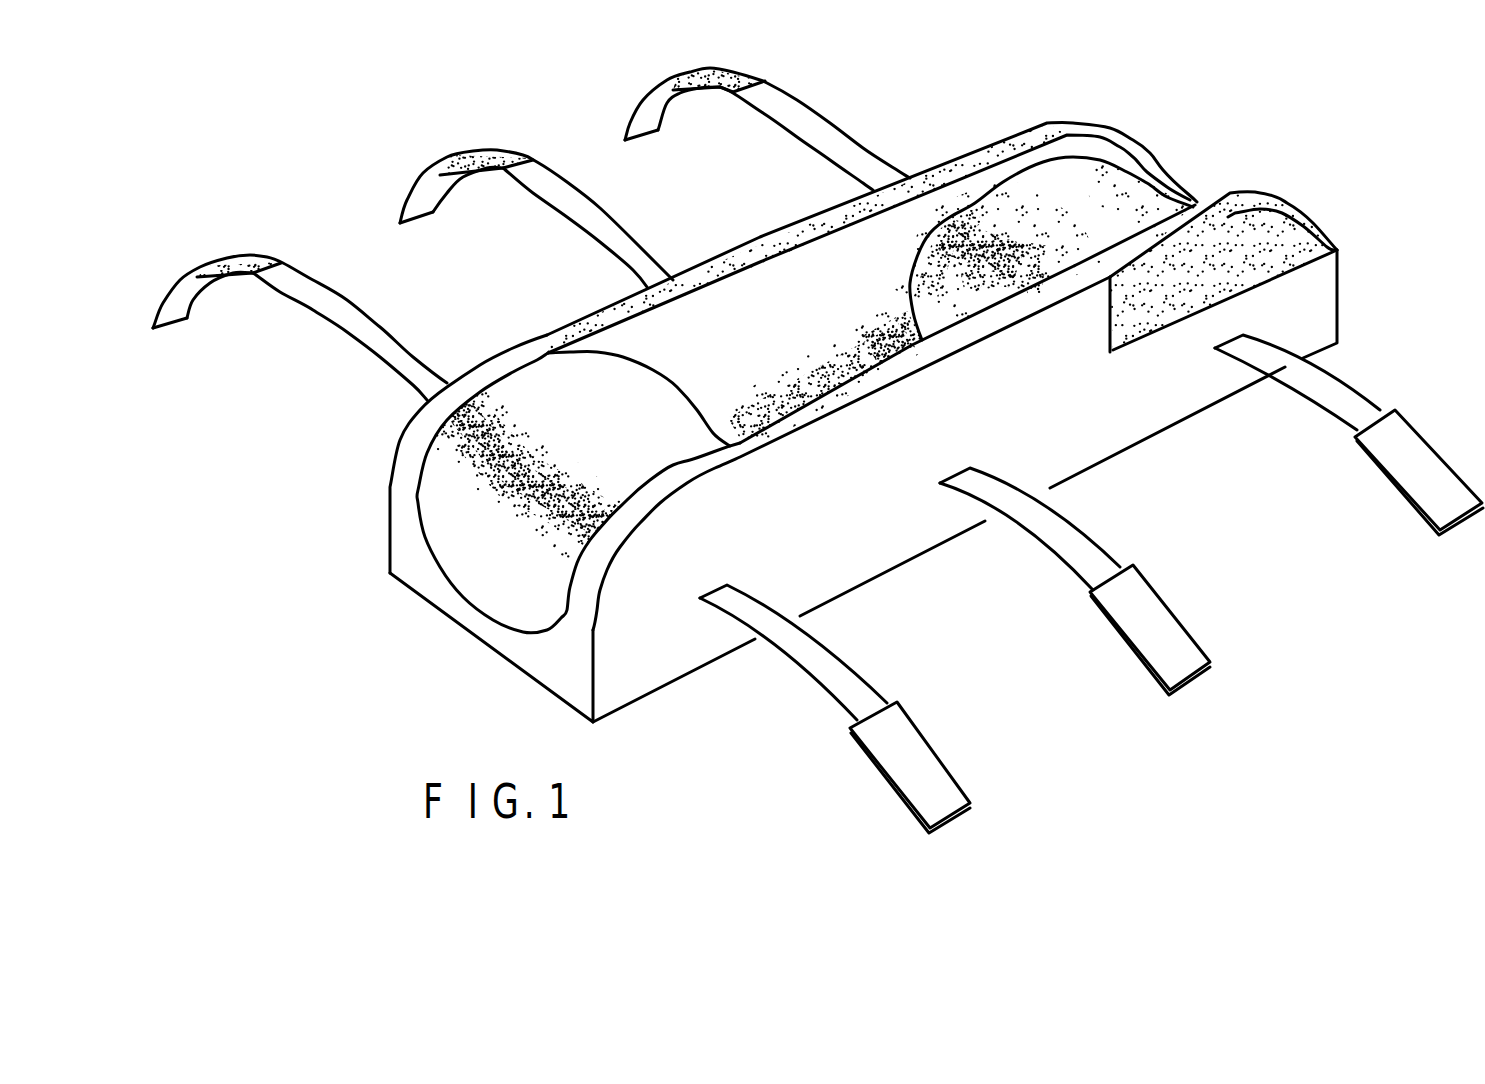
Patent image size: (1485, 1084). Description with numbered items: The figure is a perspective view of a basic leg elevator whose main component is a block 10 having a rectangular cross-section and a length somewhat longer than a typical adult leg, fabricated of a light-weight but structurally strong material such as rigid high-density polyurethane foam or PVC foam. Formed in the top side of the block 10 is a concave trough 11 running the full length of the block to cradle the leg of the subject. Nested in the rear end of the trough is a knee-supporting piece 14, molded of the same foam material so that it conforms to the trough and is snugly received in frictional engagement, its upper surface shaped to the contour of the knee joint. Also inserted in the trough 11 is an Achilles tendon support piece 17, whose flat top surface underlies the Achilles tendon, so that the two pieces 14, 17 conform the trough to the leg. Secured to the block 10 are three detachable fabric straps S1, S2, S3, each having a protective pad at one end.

The block 10 is at (1130, 437).
The concave trough 11 is at (750, 290).
The knee-supporting piece 14 is at (517, 390).
The Achilles tendon support piece 17 is at (1047, 190).
The detachable fabric strap S1 is at (1340, 388).
The detachable fabric strap S2 is at (1073, 538).
The detachable fabric strap S3 is at (847, 677).